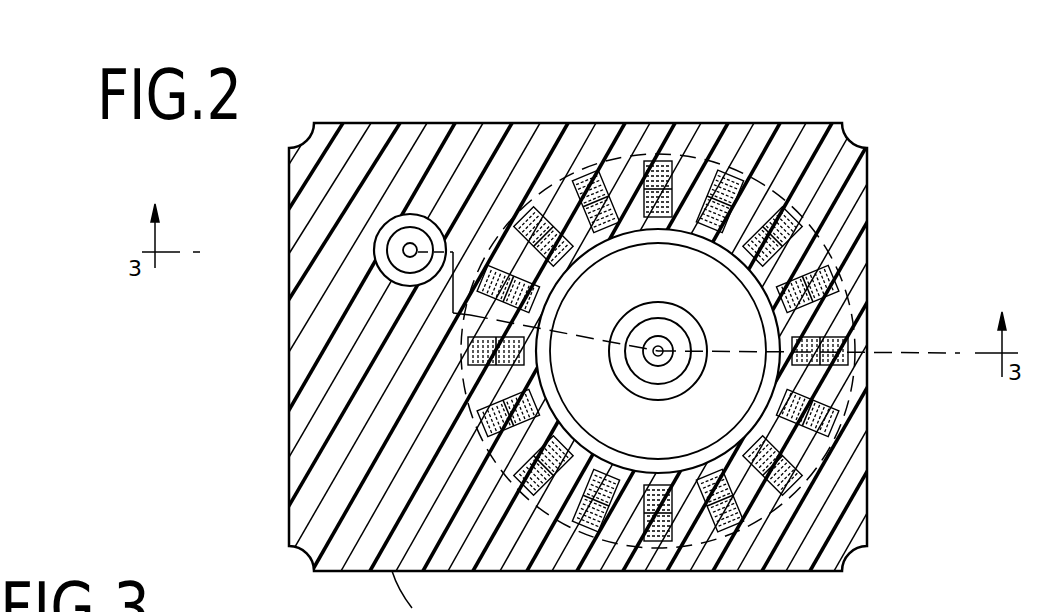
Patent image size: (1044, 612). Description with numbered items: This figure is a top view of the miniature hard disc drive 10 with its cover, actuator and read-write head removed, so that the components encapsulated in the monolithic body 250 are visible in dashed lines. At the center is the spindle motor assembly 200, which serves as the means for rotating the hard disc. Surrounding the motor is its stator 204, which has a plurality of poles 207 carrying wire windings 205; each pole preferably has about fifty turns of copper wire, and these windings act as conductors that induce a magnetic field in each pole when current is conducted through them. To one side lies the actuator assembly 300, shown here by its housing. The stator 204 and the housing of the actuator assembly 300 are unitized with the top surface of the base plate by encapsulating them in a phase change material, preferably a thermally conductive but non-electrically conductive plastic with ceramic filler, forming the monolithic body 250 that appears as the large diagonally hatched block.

The miniature hard disc drive 10 is at (662, 114).
The spindle motor assembly 200 is at (652, 430).
The stator 204 is at (875, 416).
The wire windings 205 is at (870, 356).
The poles 207 is at (873, 293).
The monolithic body 250 is at (330, 449).
The actuator assembly 300 is at (410, 250).